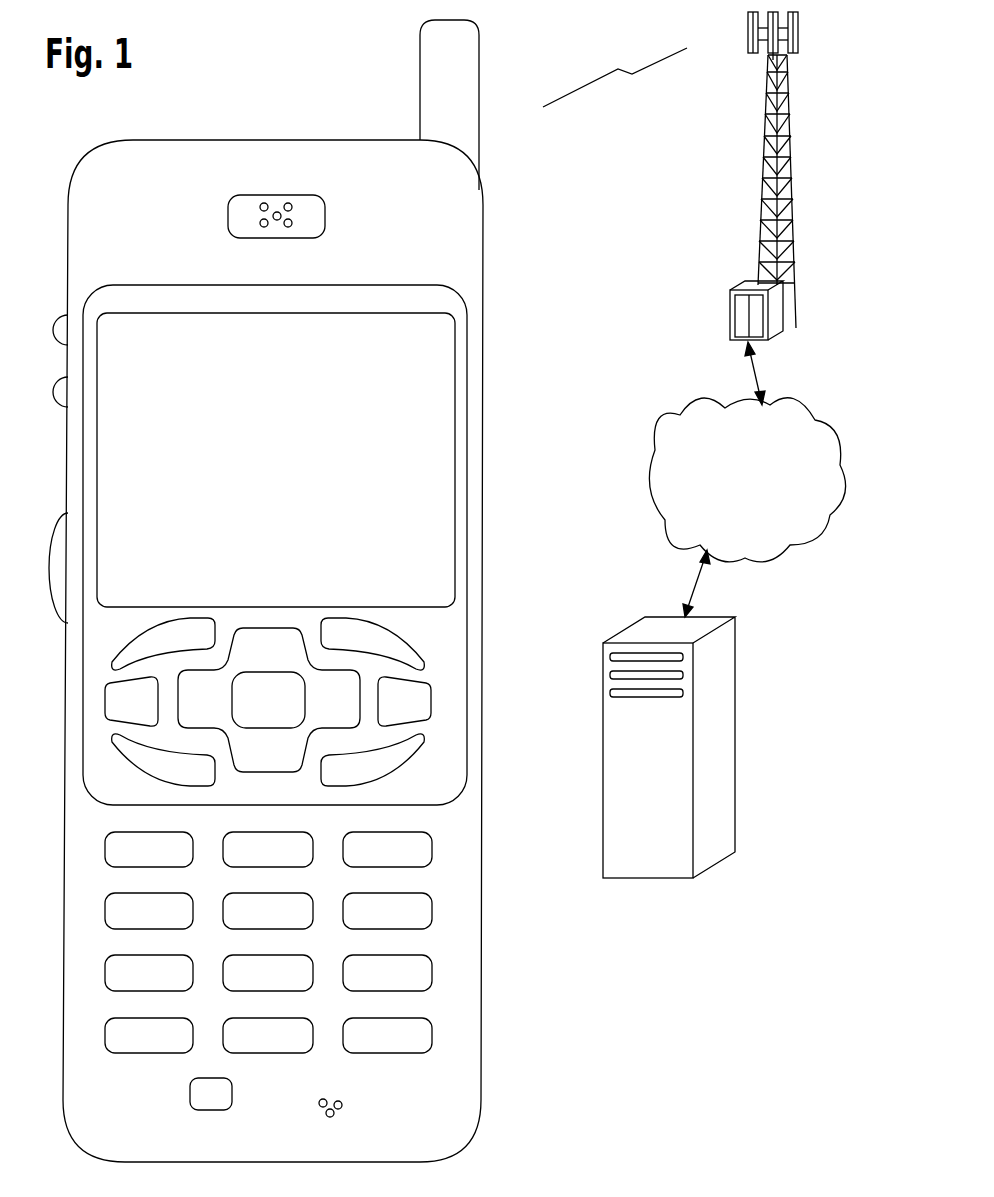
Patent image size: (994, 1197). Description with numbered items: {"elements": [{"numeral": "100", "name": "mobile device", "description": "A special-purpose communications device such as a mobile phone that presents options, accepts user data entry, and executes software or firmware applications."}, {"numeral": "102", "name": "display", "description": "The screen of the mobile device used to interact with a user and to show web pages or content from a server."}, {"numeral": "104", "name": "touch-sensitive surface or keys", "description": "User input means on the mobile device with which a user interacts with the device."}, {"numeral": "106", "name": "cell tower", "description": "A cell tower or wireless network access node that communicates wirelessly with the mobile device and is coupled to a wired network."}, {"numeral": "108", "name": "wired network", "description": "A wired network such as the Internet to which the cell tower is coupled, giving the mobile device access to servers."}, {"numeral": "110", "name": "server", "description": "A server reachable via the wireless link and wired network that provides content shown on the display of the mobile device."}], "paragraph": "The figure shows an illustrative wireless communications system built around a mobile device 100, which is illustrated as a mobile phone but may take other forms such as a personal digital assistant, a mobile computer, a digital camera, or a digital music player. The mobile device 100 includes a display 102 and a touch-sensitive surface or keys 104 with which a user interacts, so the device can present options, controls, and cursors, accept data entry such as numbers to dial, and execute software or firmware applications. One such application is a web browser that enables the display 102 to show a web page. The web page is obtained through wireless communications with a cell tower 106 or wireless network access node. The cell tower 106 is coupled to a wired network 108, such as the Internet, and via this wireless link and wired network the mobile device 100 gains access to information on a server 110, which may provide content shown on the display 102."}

The mobile device 100 is at (108, 1161).
The display 102 is at (455, 326).
The navigation keys 104 is at (493, 617).
The base station tower 106 is at (760, 190).
The network cloud 108 is at (668, 532).
The server 110 is at (648, 878).